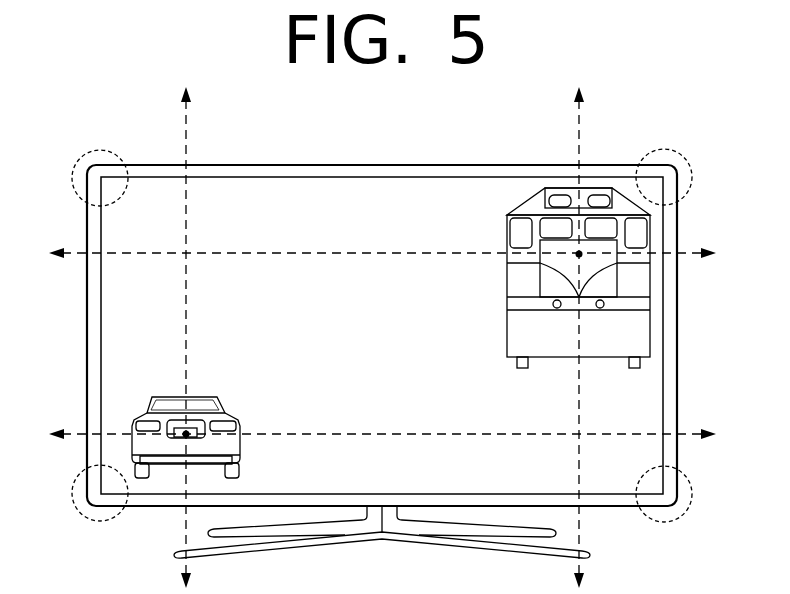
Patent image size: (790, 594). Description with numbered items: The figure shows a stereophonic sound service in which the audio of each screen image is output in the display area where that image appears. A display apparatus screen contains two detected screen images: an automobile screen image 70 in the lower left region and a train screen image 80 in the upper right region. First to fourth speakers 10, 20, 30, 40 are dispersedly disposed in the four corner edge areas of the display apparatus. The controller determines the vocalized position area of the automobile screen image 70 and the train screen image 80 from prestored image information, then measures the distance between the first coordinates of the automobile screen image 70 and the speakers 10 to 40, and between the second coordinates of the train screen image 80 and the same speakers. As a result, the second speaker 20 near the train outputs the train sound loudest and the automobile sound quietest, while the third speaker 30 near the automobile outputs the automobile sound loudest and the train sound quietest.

The first speaker 10 is at (107, 150).
The second speaker 20 is at (660, 149).
The third speaker 30 is at (100, 521).
The fourth speaker 40 is at (664, 522).
The automobile screen image 70 is at (150, 405).
The train screen image 80 is at (526, 212).